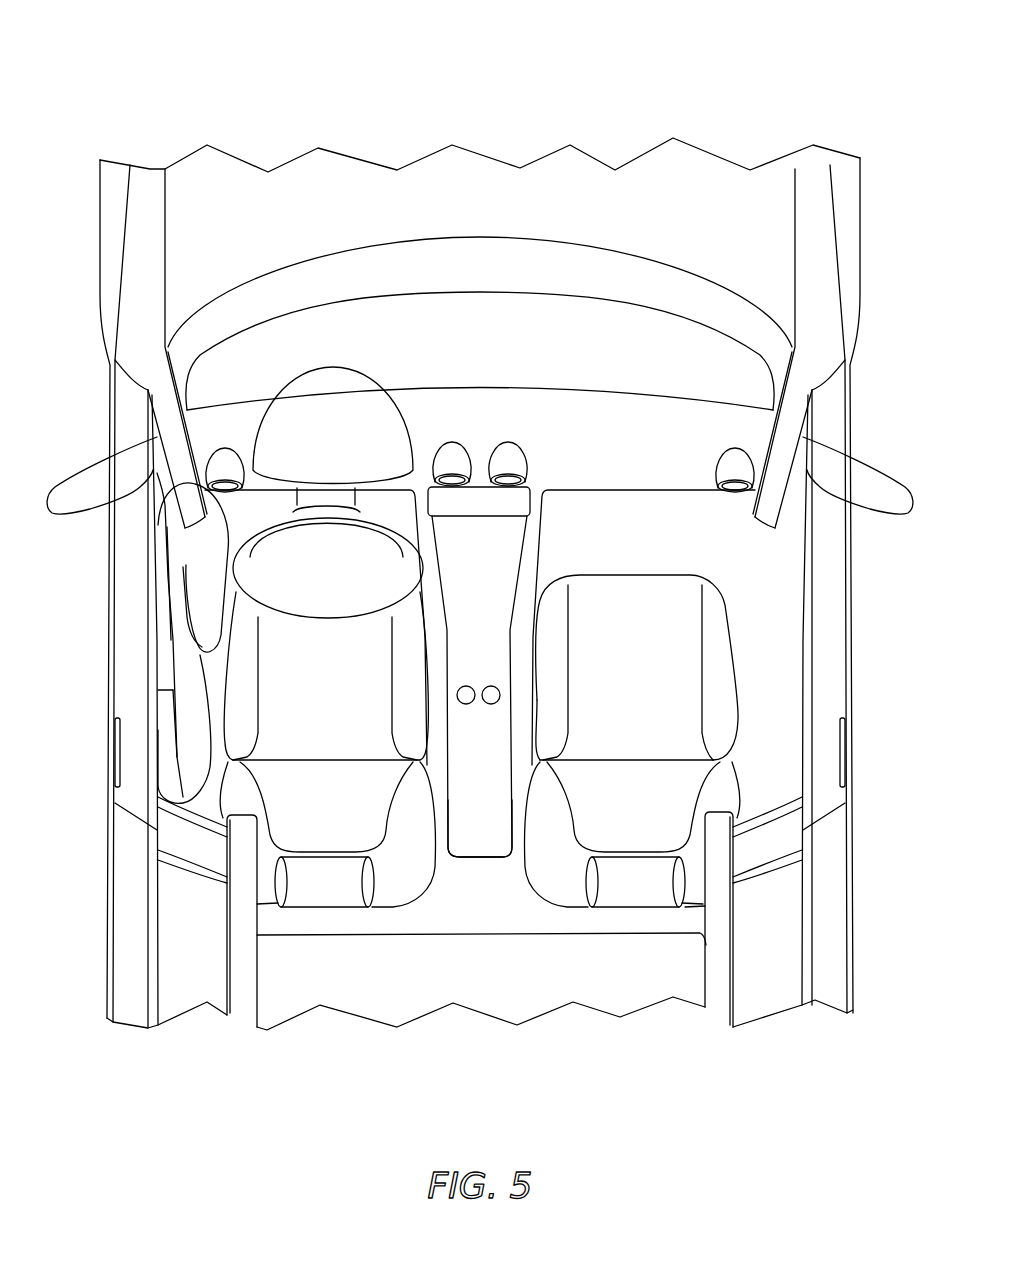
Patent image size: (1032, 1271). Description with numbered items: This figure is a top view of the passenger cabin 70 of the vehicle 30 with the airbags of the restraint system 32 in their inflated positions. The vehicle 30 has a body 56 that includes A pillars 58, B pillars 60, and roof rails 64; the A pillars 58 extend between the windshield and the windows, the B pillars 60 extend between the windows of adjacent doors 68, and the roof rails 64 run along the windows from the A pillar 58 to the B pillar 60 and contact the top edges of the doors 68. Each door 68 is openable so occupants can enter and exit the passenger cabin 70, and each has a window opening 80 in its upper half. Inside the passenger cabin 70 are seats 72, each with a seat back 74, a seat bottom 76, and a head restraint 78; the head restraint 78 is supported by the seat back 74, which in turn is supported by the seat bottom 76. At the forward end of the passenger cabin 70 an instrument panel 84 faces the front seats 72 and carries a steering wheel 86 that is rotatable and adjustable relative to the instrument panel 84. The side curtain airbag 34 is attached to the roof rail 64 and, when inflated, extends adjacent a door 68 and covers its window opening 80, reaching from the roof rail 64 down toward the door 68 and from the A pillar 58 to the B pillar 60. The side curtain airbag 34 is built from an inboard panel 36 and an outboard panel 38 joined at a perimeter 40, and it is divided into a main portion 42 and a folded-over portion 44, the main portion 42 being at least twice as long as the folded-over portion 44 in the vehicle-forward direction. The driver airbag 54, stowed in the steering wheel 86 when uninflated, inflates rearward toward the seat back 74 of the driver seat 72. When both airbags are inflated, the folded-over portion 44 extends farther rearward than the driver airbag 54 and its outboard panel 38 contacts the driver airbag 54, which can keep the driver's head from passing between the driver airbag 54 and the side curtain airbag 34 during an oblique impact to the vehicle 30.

The vehicle 30 is at (190, 70).
The restraint system 32 is at (47, 463).
The side curtain airbag 34 is at (167, 703).
The inboard panel 36 is at (195, 763).
The outboard panel 38 is at (167, 750).
The perimeter 40 is at (177, 737).
The main portion 42 is at (177, 607).
The folded-over portion 44 is at (193, 580).
The driver airbag 54 is at (322, 583).
The body 56 is at (861, 225).
The A pillars 58 is at (172, 423).
The B pillars 60 is at (187, 867).
The roof rails 64 is at (247, 982).
The doors 68 is at (130, 860).
The passenger cabin 70 is at (535, 995).
The seats 72 is at (432, 887).
The seat back 74 is at (523, 828).
The seat bottom 76 is at (533, 635).
The head restraint 78 is at (348, 912).
The window opening 80 is at (803, 587).
The instrument panel 84 is at (643, 483).
The steering wheel 86 is at (311, 520).